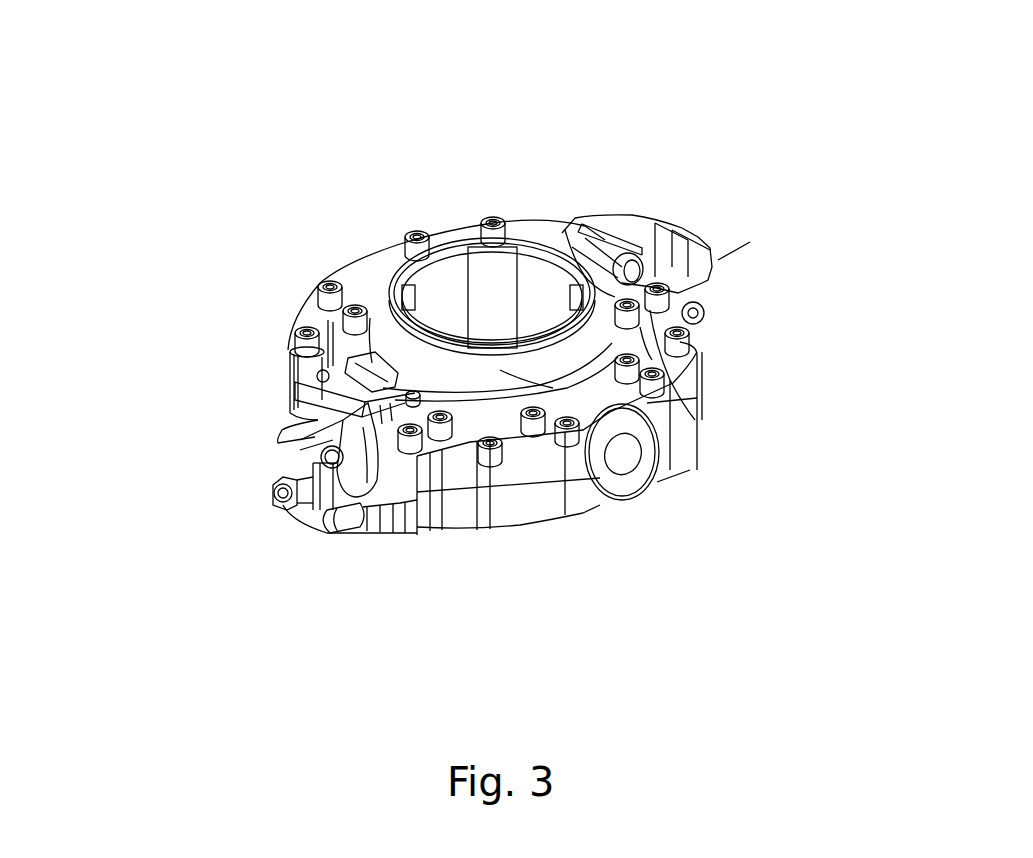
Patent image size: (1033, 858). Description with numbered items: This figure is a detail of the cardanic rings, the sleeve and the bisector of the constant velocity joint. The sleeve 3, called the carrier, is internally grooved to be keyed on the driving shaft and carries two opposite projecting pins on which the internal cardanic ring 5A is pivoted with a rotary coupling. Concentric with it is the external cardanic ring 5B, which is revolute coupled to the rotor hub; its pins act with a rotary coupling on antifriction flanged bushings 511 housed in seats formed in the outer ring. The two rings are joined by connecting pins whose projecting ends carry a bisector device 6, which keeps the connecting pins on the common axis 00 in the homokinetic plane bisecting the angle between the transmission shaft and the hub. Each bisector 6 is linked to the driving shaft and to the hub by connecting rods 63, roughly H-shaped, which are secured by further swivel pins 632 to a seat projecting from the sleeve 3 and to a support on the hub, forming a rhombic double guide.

The internal cardanic ring 5A is at (474, 254).
The external cardanic ring 5B is at (583, 538).
The antifriction flanged bushing 511 is at (749, 506).
The sleeve 3 is at (663, 246).
The bisector device 6 is at (266, 450).
The connecting rod 63 is at (380, 386).
The swivel pin 632 is at (333, 435).
The common axis 00 is at (277, 503).